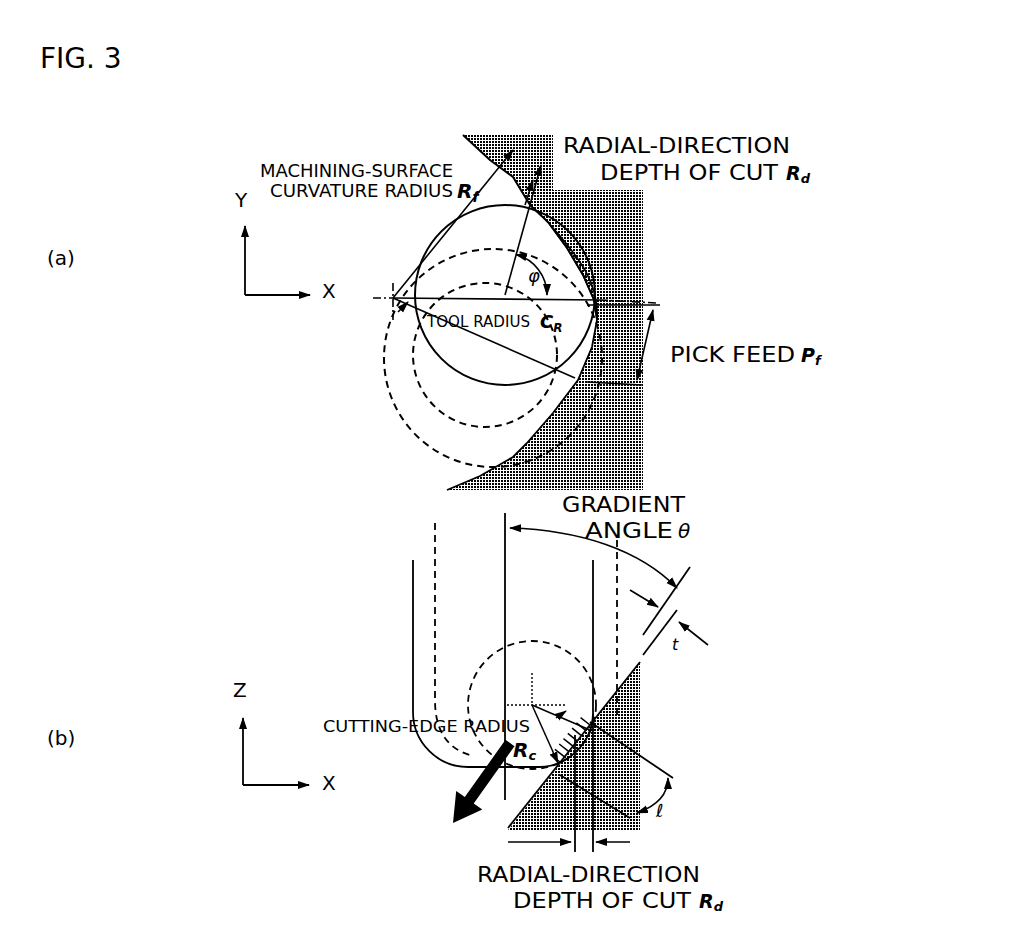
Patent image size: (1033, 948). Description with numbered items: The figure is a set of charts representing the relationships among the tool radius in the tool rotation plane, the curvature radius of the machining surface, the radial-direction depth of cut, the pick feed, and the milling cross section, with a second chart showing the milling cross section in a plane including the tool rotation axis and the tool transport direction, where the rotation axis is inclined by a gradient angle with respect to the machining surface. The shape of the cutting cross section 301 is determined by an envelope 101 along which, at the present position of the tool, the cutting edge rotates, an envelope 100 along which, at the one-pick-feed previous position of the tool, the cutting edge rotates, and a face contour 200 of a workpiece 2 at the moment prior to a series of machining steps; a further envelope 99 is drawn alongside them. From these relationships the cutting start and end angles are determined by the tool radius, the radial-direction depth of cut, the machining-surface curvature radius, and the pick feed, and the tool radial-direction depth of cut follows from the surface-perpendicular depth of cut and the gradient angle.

The workpiece 2 is at (627, 284).
The ball end mill tool position (two passes before) 99 is at (393, 423).
The envelope 100 is at (403, 377).
The envelope 101 is at (423, 339).
The face contour 200 is at (463, 135).
The cutting cross section 301 is at (600, 233).